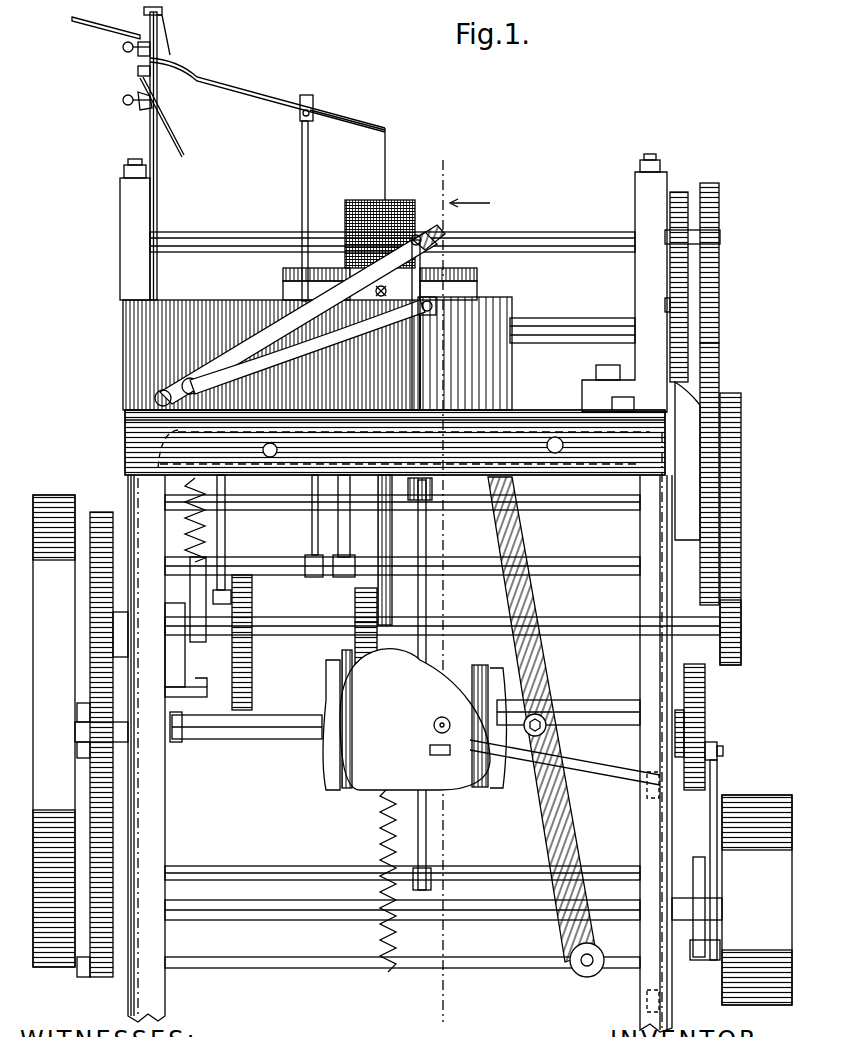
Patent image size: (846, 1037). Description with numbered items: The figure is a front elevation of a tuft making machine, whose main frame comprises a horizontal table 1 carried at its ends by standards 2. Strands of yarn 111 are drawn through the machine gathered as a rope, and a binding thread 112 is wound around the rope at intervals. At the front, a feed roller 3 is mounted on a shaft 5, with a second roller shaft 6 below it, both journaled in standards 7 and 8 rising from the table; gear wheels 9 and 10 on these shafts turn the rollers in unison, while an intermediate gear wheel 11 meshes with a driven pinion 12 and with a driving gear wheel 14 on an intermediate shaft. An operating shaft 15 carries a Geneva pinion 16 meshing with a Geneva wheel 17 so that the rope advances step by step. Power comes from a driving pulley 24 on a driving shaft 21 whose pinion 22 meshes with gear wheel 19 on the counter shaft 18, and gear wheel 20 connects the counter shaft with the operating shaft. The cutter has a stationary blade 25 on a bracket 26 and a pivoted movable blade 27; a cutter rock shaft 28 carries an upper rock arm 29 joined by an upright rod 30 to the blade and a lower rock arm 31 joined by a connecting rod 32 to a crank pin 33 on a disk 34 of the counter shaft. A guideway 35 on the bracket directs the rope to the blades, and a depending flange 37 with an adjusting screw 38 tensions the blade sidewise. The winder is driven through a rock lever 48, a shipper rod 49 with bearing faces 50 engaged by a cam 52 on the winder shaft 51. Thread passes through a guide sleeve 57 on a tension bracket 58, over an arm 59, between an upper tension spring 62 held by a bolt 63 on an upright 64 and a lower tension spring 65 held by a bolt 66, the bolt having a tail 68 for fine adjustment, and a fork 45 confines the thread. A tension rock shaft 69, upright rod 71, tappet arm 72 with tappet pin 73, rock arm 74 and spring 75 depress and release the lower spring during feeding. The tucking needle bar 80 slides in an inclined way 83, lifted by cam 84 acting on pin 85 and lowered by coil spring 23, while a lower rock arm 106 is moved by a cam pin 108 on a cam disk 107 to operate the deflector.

The table 1 is at (541, 411).
The standards 2 is at (400, 732).
The feed roller 3 is at (354, 200).
The feed roller shaft 5 is at (563, 232).
The feed roller shaft 6 is at (563, 322).
The standard 7 is at (135, 229).
The standard 8 is at (651, 283).
The gear wheel 9 is at (678, 192).
The gear wheel 10 is at (668, 302).
The intermediate gear wheel 11 is at (719, 346).
The driven pinion 12 is at (719, 204).
The driving gear wheel 14 is at (702, 553).
The operating shaft 15 is at (588, 617).
The Geneva pinion 16 is at (741, 656).
The Geneva wheel 17 is at (741, 502).
The counter shaft 18 is at (600, 712).
The gear wheel 19 is at (114, 790).
The gear wheel 20 is at (96, 512).
The driving shaft 21 is at (233, 920).
The pinion 22 is at (100, 978).
The coil spring 23 is at (381, 939).
The driving pulley 24 is at (757, 900).
The stationary cutting blade 25 is at (307, 347).
The bracket 26 is at (123, 376).
The movable cutting blade 27 is at (300, 315).
The cutter rock shaft 28 is at (225, 870).
The upper rock arm 29 is at (432, 880).
The upright rod 30 is at (436, 846).
The lower rock arm 31 is at (700, 962).
The connecting rod 32 is at (718, 783).
The crank pin 33 is at (723, 750).
The disk 34 is at (705, 708).
The guideway 35 is at (400, 291).
The depending flange 37 is at (125, 455).
The adjusting screw 38 is at (555, 453).
The fork 45 is at (313, 188).
The rock lever 48 is at (546, 727).
The shipper rod 49 is at (265, 740).
The bearing faces 50 is at (328, 780).
The winder shaft 51 is at (436, 730).
The cam 52 is at (384, 708).
The guide sleeve 57 is at (138, 70).
The tension bracket 58 is at (144, 12).
The arm 59 is at (162, 13).
The upper tension spring 62 is at (222, 82).
The bolt 63 is at (123, 48).
The upright 64 is at (158, 212).
The lower tension spring 65 is at (348, 122).
The bolt 66 is at (123, 102).
The tail 68 is at (72, 19).
The tension rock shaft 69 is at (402, 573).
The upright rod 71 is at (312, 537).
The tappet arm 72 is at (168, 651).
The tappet pin 73 is at (583, 510).
The rock arm 74 is at (191, 598).
The spring 75 is at (187, 538).
The needle bar 80 is at (392, 565).
The inclined way 83 is at (420, 488).
The cam 84 is at (356, 652).
The pin 85 is at (355, 604).
The lower rock arm 106 is at (225, 537).
The cam disk 107 is at (252, 660).
The cam pin 108 is at (232, 598).
The yarn 111 is at (392, 325).
The binding thread 112 is at (183, 156).